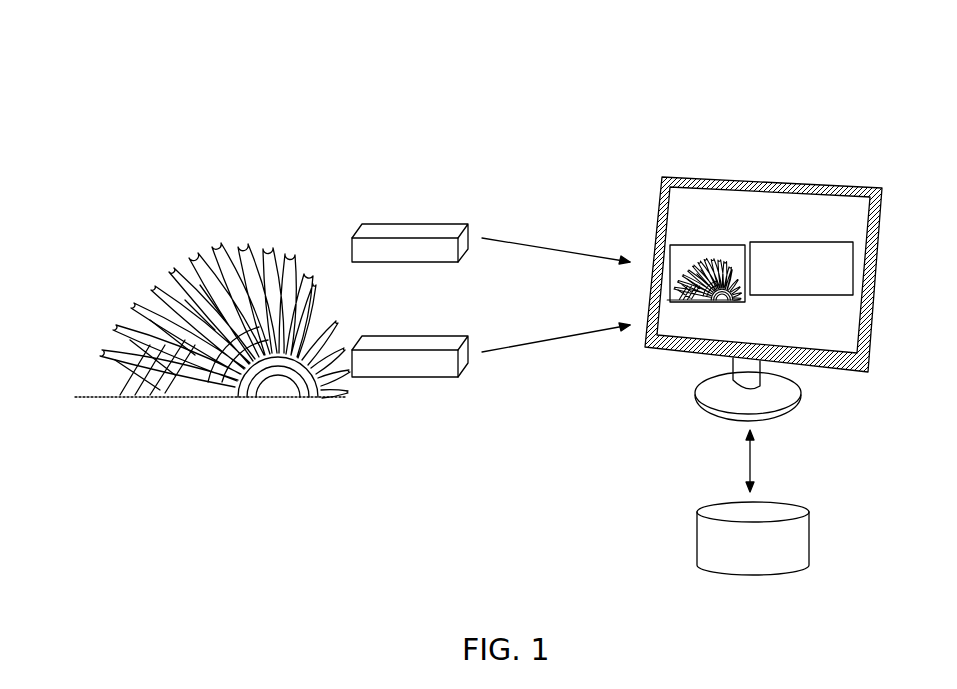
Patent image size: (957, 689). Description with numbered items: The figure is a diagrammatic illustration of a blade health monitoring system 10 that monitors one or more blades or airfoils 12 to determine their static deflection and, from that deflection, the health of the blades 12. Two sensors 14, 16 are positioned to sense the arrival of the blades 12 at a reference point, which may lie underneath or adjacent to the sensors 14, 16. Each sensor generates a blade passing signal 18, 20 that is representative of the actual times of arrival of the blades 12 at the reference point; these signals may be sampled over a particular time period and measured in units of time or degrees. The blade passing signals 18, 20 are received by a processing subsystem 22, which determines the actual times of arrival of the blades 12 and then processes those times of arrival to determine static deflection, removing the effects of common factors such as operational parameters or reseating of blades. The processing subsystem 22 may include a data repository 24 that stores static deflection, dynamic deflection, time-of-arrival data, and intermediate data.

The blade health monitoring system 10 is at (158, 50).
The blades or airfoils 12 is at (276, 283).
The sensor 14 is at (408, 223).
The sensor 16 is at (408, 336).
The blade passing signal 18 is at (522, 244).
The blade passing signal 20 is at (522, 352).
The processing subsystem 22 is at (877, 307).
The data repository 24 is at (810, 537).